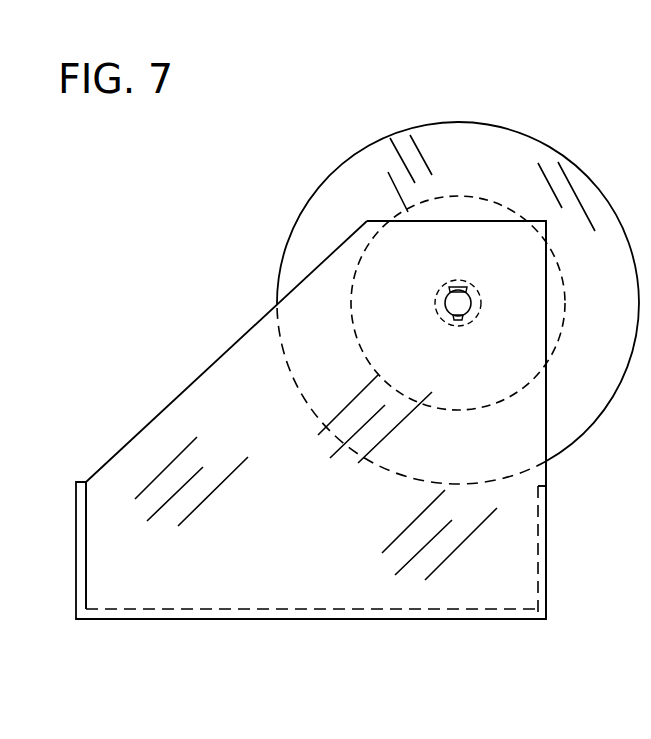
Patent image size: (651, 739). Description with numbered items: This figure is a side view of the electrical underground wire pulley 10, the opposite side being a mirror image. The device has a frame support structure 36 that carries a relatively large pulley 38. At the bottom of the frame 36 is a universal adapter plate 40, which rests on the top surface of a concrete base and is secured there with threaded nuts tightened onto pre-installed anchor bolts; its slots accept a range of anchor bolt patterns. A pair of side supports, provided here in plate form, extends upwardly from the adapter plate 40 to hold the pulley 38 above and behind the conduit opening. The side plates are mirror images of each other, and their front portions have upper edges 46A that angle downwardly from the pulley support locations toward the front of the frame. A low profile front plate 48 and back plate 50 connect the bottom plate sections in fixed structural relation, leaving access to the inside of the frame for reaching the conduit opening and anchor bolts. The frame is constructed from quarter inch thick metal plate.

The electrical underground wire pulley 10 is at (150, 254).
The frame support structure 36 is at (140, 432).
The pulley 38 is at (293, 236).
The bottom universal adapter plate 40 is at (172, 612).
The upper edges 46A is at (207, 371).
The front plate 48 is at (76, 593).
The back plate 50 is at (546, 587).